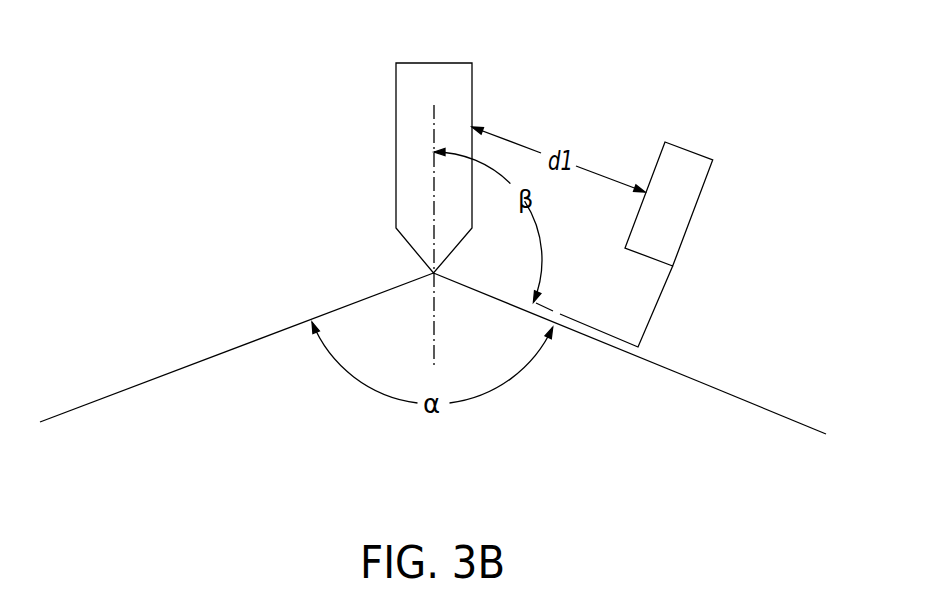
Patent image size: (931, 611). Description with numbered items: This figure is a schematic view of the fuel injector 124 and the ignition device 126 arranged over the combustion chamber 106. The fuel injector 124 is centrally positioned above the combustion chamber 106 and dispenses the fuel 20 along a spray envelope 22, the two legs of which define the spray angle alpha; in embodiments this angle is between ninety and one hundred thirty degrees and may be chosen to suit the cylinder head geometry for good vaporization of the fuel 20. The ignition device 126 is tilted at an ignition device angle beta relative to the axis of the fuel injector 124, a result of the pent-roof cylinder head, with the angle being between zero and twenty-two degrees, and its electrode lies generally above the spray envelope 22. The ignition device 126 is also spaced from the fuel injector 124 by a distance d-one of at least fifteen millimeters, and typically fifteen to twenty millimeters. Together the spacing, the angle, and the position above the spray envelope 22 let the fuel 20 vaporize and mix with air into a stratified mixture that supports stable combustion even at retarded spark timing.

The fuel injector 124 is at (401, 131).
The ignition device 126 is at (681, 208).
The spray envelope 22 is at (744, 398).
The fuel 20 is at (676, 426).
The combustion chamber 106 is at (457, 488).